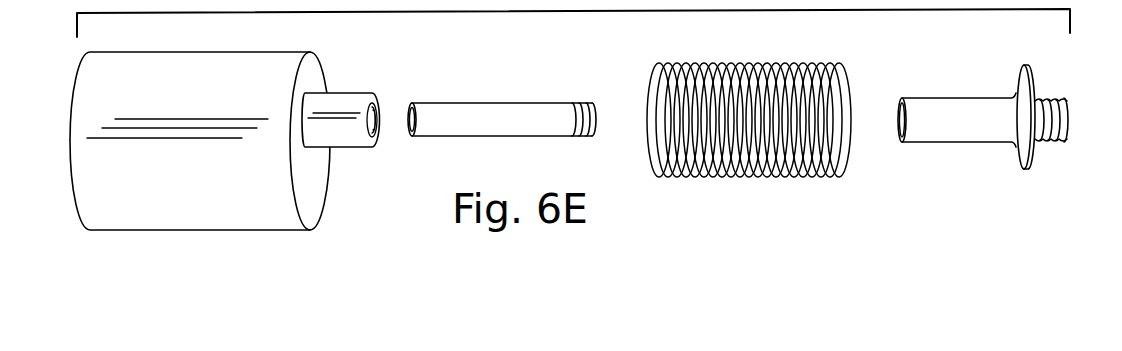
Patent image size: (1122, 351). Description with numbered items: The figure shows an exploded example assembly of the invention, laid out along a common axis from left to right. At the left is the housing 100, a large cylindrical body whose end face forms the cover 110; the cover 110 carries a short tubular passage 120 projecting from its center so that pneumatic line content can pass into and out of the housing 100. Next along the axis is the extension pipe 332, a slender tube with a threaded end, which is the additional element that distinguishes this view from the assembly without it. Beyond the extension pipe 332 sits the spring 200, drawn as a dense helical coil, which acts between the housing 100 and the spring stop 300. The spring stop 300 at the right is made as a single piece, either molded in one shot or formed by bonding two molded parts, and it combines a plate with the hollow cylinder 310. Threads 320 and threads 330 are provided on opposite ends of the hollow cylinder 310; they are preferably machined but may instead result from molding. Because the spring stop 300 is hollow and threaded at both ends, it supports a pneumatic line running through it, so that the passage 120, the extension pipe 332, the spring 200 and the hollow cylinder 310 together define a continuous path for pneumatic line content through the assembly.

The housing 100 is at (221, 166).
The cover 110 is at (312, 192).
The passage 120 is at (352, 92).
The extension pipe 332 is at (490, 102).
The spring 200 is at (753, 63).
The spring stop 300 is at (986, 128).
The hollow cylinder 310 is at (975, 98).
The threads 320 is at (1069, 113).
The threads 330 is at (896, 123).